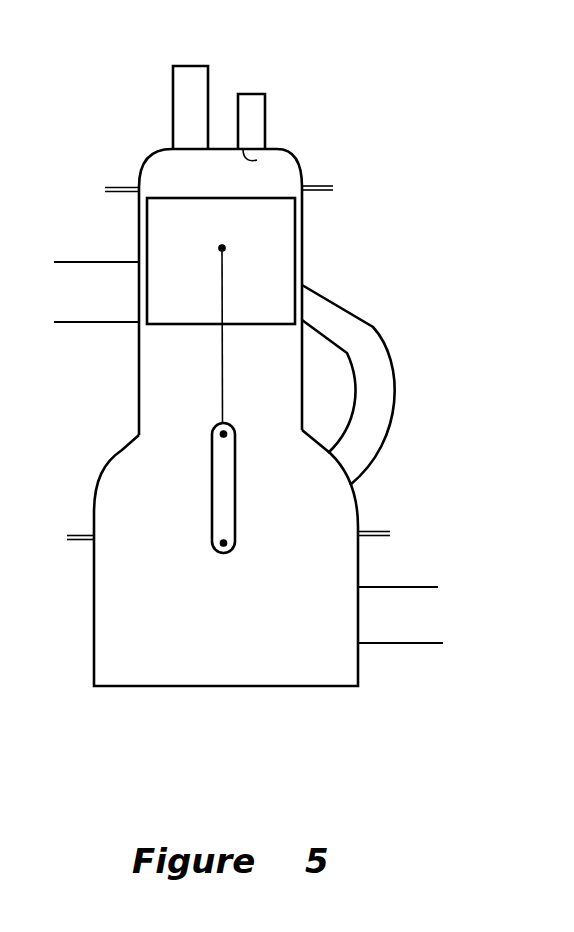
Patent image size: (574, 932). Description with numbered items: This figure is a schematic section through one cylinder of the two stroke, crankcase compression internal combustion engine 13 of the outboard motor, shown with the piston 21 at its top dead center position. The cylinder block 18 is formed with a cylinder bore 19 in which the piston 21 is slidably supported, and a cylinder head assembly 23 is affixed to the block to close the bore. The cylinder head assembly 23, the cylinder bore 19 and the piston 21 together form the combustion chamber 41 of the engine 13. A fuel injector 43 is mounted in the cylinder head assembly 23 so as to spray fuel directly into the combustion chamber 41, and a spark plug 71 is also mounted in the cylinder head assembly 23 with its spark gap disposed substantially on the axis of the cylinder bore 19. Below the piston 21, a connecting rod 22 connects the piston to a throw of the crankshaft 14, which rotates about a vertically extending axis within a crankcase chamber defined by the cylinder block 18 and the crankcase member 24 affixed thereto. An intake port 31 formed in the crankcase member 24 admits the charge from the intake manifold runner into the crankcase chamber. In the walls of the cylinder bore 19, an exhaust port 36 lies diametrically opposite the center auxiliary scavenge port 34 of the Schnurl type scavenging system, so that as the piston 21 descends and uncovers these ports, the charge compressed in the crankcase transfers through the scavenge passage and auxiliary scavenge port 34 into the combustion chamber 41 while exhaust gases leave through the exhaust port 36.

The internal combustion engine 13 is at (108, 93).
The cylinder head assembly 23 is at (139, 168).
The fuel injector 43 is at (190, 77).
The spark plug 71 is at (250, 108).
The combustion chamber 41 is at (262, 182).
The cylinder block 18 is at (139, 224).
The piston 21 is at (273, 250).
The connecting rod 22 is at (222, 393).
The crankshaft 14 is at (235, 525).
The cylinder bore 19 is at (139, 366).
The exhaust port 36 is at (139, 303).
The auxiliary scavenge port 34 is at (302, 307).
The intake port 31 is at (403, 630).
The crankcase member 24 is at (221, 686).